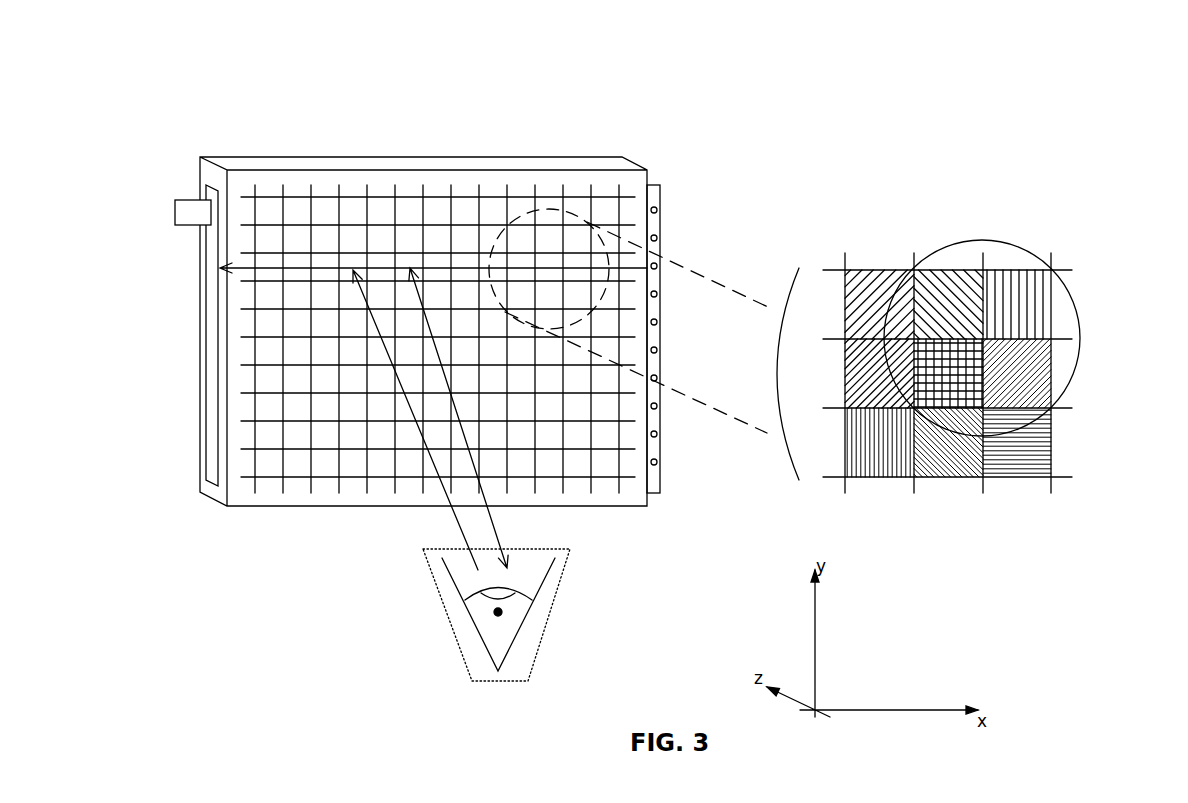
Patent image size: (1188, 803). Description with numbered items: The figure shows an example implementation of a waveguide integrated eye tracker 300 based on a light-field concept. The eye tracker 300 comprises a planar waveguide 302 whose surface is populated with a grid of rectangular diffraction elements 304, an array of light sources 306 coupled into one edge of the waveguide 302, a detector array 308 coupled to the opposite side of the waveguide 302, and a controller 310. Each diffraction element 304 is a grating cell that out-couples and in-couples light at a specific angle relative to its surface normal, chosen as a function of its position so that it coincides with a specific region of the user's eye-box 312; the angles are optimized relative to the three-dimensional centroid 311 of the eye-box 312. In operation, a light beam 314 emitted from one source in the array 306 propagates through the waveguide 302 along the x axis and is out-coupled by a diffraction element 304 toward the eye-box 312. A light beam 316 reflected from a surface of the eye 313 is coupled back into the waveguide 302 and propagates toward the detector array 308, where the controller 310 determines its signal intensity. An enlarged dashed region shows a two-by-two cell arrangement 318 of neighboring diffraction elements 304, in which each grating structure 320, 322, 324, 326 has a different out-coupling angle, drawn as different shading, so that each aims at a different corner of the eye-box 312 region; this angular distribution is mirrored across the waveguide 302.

The eye tracker 300 is at (283, 120).
The waveguide 302 is at (632, 160).
The diffraction elements 304 is at (548, 237).
The array of light sources 306 is at (658, 256).
The detector array 308 is at (215, 477).
The controller 310 is at (195, 197).
The 3D centroid 311 is at (502, 613).
The eye-box 312 is at (556, 597).
The eye 313 is at (480, 612).
The light beam 314 is at (498, 525).
The reflected light beam 316 is at (455, 520).
The 2×2 cell arrangement 318 is at (996, 355).
The grating structure 320 is at (955, 303).
The grating structure 322 is at (1038, 297).
The grating structure 324 is at (968, 393).
The grating structure 326 is at (1037, 372).